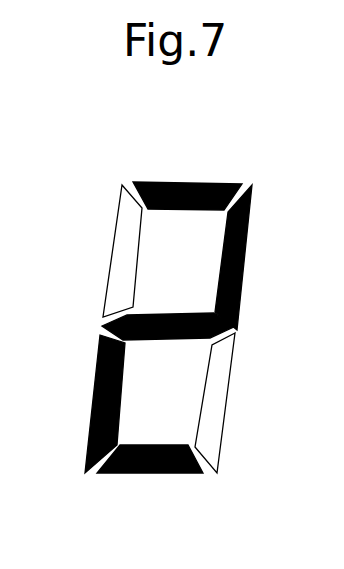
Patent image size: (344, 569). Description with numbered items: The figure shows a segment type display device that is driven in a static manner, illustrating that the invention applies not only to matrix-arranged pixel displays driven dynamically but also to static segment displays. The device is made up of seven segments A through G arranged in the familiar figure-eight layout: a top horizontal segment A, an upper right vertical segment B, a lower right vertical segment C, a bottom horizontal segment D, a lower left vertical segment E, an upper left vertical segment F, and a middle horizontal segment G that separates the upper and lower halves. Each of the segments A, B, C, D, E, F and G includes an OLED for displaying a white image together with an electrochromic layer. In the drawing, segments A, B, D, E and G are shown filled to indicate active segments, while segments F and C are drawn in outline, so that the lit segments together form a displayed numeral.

The segment A is at (187, 216).
The segment B is at (245, 257).
The segment C is at (228, 403).
The segment D is at (150, 491).
The segment E is at (82, 404).
The segment F is at (99, 251).
The segment G is at (169, 347).